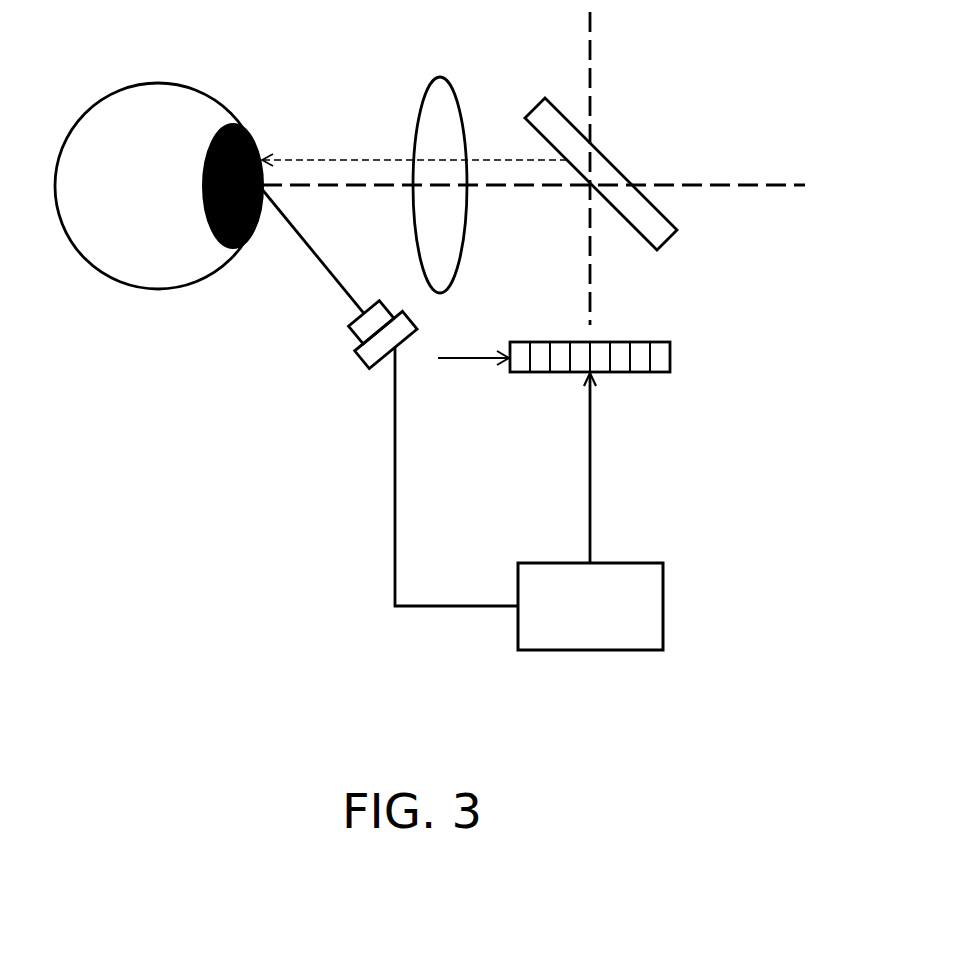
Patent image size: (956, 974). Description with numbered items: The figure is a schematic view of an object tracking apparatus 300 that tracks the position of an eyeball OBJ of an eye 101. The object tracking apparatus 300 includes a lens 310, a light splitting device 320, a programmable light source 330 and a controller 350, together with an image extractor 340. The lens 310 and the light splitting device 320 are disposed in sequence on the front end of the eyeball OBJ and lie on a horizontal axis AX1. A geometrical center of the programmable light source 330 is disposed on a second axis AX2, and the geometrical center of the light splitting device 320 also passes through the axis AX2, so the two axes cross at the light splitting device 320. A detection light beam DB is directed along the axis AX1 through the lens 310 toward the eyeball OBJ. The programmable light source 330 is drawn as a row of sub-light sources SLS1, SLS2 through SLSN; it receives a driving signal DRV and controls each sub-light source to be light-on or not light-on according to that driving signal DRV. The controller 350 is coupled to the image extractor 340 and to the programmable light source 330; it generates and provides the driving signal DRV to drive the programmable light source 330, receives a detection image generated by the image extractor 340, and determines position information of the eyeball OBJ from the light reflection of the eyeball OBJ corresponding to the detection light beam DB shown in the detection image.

The eye 101 is at (108, 95).
The eyeball OBJ is at (213, 137).
The lens 310 is at (455, 80).
The light splitting device 320 is at (550, 100).
The programmable light source 330 is at (618, 405).
The image extractor 340 is at (368, 353).
The controller 350 is at (621, 562).
The object tracking apparatus 300 is at (840, 738).
The axis AX1 is at (758, 183).
The axis AX2 is at (593, 78).
The detection light beam DB is at (343, 158).
The driving signal DRV is at (620, 495).
The sub-light source SLS1 is at (520, 364).
The sub-light source SLS2 is at (540, 365).
The sub-light source SLSN is at (696, 359).